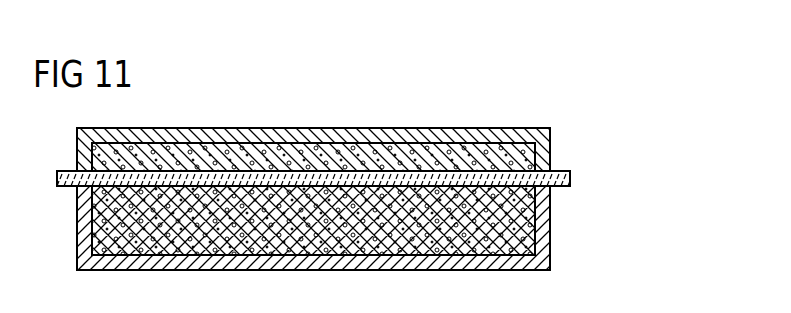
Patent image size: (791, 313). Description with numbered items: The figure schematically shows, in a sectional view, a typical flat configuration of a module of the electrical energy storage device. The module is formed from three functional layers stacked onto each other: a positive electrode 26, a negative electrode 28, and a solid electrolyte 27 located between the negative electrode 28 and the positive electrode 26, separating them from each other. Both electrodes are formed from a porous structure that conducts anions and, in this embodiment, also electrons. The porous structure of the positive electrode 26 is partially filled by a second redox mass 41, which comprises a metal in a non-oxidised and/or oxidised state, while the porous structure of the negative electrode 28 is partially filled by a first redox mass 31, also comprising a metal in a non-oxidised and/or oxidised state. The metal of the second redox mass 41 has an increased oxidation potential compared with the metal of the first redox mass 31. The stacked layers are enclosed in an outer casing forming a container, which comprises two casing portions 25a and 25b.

The casing portion 25a is at (545, 235).
The casing portion 25b is at (408, 128).
The positive electrode 26 is at (530, 160).
The solid electrolyte 27 is at (562, 177).
The negative electrode 28 is at (520, 212).
The first redox mass 31 is at (96, 226).
The second redox mass 41 is at (96, 157).